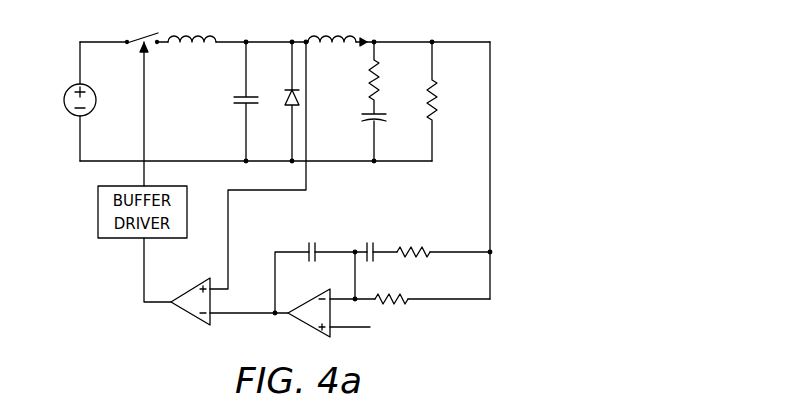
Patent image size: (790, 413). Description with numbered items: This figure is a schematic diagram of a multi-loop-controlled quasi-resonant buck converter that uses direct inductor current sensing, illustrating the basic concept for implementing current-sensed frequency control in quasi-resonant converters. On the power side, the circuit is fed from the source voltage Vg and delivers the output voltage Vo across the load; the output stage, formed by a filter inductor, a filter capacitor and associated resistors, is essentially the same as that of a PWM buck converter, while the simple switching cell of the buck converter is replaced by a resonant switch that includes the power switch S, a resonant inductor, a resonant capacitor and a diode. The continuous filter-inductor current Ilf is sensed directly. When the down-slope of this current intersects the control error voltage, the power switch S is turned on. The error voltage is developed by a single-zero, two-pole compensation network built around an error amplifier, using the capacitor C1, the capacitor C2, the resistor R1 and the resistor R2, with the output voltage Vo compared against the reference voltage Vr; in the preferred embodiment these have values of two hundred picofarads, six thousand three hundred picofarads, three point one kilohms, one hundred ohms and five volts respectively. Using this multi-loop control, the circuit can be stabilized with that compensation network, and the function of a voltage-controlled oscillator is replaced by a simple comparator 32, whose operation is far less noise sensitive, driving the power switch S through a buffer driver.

The comparator 32 is at (190, 315).
The power switch S is at (142, 100).
The input voltage source Vg is at (67, 101).
The continuous filter-inductor current Ilf is at (337, 28).
The output voltage load resistor Vo is at (427, 87).
The reference voltage Vr is at (360, 330).
The capacitor C1 is at (310, 239).
The capacitor C2 is at (370, 239).
The resistor R1 is at (391, 287).
The resistor R2 is at (413, 240).